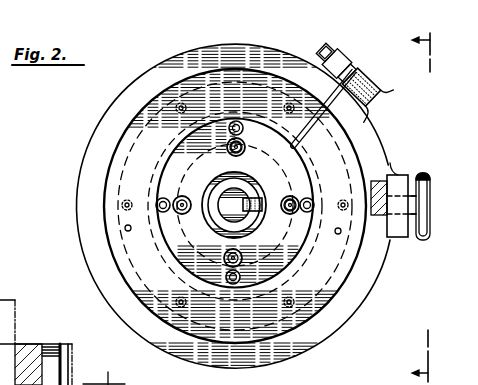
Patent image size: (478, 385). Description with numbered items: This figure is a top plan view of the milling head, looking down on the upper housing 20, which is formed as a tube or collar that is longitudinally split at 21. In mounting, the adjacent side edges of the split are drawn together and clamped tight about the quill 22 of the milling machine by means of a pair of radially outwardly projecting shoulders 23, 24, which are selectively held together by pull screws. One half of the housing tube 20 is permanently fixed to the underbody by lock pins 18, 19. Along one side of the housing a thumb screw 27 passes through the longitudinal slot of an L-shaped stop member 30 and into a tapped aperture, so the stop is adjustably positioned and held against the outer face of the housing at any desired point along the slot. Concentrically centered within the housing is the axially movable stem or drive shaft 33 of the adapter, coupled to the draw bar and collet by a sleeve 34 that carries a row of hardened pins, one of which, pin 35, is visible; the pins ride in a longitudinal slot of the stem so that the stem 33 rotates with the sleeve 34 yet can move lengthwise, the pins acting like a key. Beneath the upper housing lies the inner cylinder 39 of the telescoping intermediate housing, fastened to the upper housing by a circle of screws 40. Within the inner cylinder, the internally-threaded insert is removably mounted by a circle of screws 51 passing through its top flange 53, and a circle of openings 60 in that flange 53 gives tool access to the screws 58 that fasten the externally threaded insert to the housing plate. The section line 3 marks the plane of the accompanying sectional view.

The section line 3— 3 is at (410, 209).
The lock pin 18 is at (130, 232).
The lock pin 19 is at (336, 235).
The upper housing 20 is at (357, 312).
The longitudinal split 21 is at (332, 99).
The quill 22 is at (19, 321).
The shoulder 23 is at (378, 96).
The shoulder 24 is at (345, 60).
The thumb screw 27 is at (427, 172).
The L-shaped stop member 30 is at (399, 237).
The stem or drive shaft 33 is at (238, 200).
The sleeve 34 is at (260, 232).
The hardened pin 35 is at (262, 202).
The inner cylinder 39 is at (292, 273).
The screws 40 is at (284, 105).
The screws 51 is at (160, 211).
The top flange 53 is at (219, 241).
The screws 58 is at (227, 148).
The openings 60 is at (182, 196).